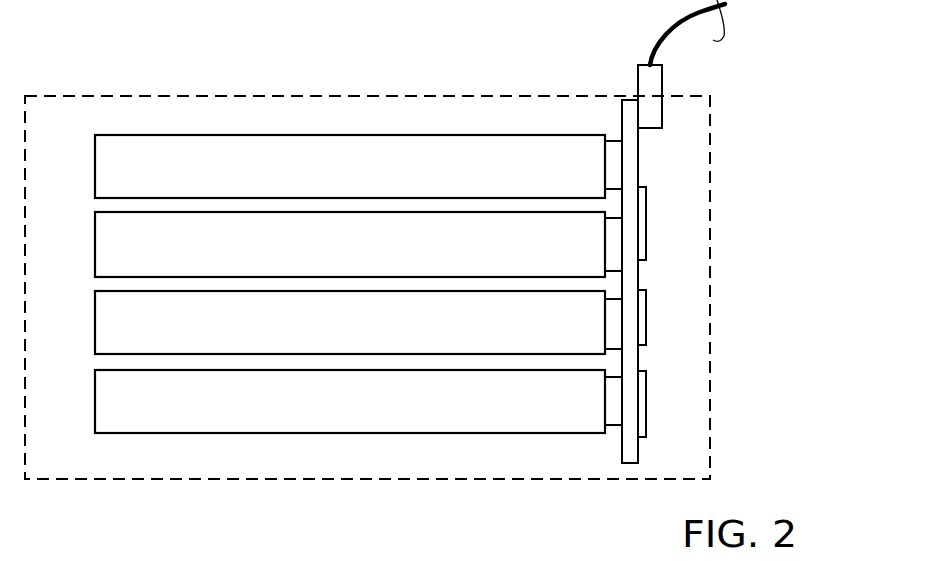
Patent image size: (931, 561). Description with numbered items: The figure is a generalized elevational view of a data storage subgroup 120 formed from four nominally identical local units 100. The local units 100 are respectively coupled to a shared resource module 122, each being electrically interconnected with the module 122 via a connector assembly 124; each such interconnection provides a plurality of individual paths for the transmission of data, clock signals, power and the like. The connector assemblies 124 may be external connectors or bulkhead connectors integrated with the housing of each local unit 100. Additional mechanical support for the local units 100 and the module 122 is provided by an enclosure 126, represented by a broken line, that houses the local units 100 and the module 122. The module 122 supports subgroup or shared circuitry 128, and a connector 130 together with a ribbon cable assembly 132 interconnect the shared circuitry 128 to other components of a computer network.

The local unit 100 is at (95, 166).
The data storage subgroup 120 is at (224, 49).
The shared resource module 122 is at (630, 457).
The connector assembly 124 is at (613, 168).
The enclosure 126 is at (378, 96).
The shared circuitry 128 is at (647, 213).
The connector 130 is at (653, 113).
The ribbon cable assembly 132 is at (675, 15).